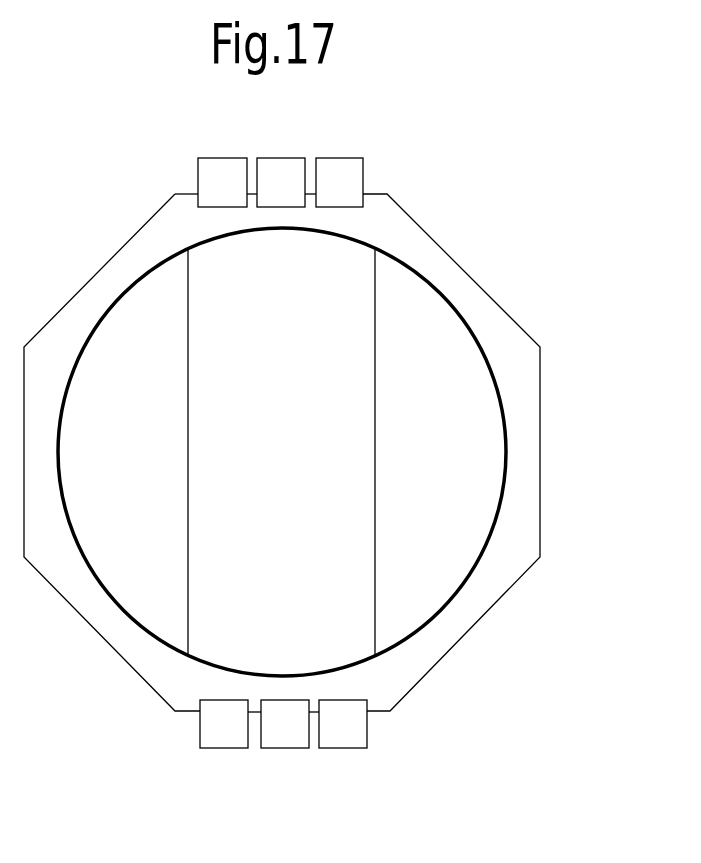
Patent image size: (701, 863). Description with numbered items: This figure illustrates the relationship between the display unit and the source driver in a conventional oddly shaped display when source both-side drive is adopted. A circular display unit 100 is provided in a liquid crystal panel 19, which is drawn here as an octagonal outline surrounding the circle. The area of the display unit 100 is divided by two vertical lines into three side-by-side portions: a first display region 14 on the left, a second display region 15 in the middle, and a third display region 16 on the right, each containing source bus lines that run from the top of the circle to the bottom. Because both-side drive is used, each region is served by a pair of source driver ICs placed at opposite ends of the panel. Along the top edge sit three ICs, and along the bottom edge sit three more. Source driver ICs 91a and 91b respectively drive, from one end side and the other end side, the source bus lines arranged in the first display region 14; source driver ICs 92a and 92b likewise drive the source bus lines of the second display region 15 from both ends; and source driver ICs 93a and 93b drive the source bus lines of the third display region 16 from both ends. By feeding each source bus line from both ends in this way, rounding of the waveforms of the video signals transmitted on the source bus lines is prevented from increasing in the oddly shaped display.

The first display region 14 is at (103, 517).
The second display region 15 is at (240, 587).
The third display region 16 is at (438, 533).
The liquid crystal panel 19 is at (452, 257).
The display unit 100 is at (325, 232).
The source driver IC 91a is at (227, 157).
The source driver IC 92a is at (285, 157).
The source driver IC 93a is at (342, 157).
The source driver IC 91b is at (223, 750).
The source driver IC 92b is at (283, 750).
The source driver IC 93b is at (342, 750).